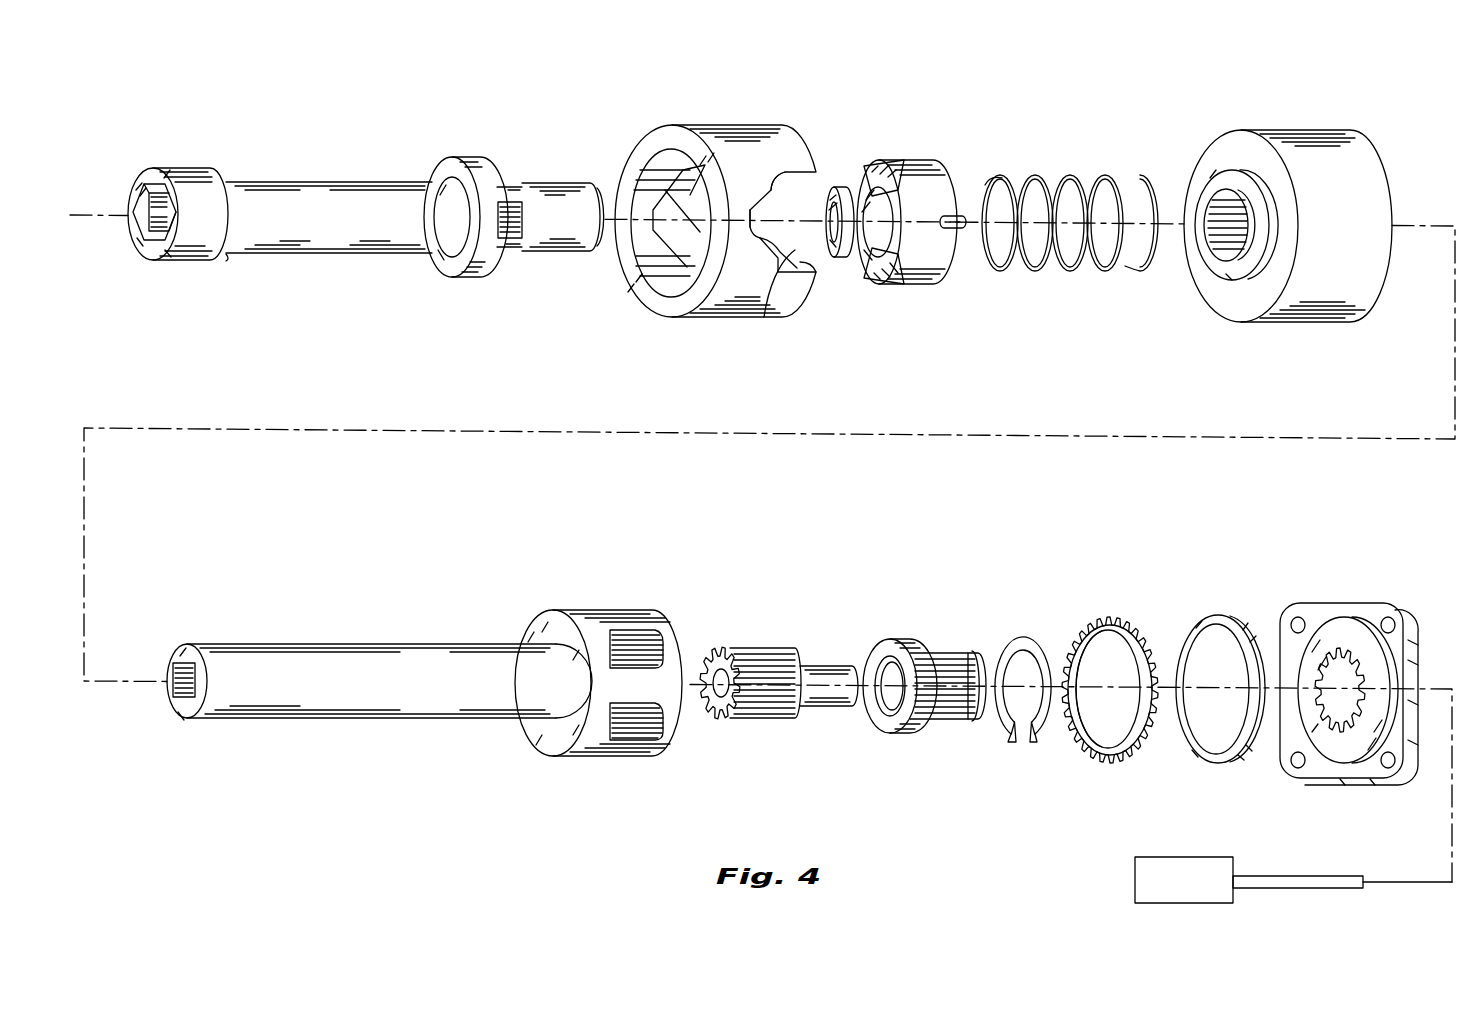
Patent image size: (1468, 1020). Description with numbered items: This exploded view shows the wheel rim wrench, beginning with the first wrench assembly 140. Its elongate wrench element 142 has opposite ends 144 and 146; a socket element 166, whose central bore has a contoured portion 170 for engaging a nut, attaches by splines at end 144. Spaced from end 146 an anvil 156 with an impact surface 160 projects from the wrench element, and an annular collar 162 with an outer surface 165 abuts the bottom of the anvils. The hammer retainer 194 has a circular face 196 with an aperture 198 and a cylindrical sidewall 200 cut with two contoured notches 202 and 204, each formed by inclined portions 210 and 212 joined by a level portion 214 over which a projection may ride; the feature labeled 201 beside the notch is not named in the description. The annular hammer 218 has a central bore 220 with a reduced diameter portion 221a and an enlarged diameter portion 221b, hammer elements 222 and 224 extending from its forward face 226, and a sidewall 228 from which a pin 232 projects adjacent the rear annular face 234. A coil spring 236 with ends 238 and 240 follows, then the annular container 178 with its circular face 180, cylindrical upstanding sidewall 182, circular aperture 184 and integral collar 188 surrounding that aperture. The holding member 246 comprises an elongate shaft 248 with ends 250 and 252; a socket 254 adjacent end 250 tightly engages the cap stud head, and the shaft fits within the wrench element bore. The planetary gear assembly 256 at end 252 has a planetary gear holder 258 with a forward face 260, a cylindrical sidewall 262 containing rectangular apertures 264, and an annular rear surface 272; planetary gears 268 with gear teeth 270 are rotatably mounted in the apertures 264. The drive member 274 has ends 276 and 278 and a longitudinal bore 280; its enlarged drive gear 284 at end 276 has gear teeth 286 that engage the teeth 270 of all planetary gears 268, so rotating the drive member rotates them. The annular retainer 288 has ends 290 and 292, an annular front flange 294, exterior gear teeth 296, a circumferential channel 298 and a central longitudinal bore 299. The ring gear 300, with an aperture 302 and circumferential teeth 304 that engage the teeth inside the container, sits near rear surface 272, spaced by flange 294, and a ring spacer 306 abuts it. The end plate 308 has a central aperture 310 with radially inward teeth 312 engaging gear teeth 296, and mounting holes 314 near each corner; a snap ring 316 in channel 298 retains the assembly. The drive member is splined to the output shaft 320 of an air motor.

The first wrench assembly 140 is at (906, 70).
The elongate wrench element 142 is at (338, 222).
The end 144 is at (227, 258).
The other end 146 is at (590, 183).
The anvil 156 is at (520, 226).
The impact surface 160 is at (516, 235).
The annular collar 162 is at (448, 212).
The outer surface 165 is at (456, 260).
The socket element 166 is at (163, 216).
The contoured portion 170 is at (146, 203).
The container 178 is at (1320, 322).
The circular face 180 is at (1304, 224).
The cylindrical upstanding sidewall 182 is at (1360, 290).
The circular aperture 184 is at (1236, 210).
The integral collar 188 is at (1225, 270).
The hammer retainer 194 is at (736, 317).
The circular face 196 is at (670, 302).
The aperture 198 is at (645, 272).
The cylindrical sidewall 200 is at (713, 221).
The slot edge 201 is at (812, 250).
The contoured notch 202 is at (683, 200).
The contoured notch 204 is at (794, 266).
The inclined portion 210 is at (790, 175).
The inclined portion 212 is at (770, 250).
The level portion 214 is at (750, 228).
The hammer 218 is at (910, 211).
The central bore 220 is at (872, 272).
The reduced diameter portion 221a is at (870, 165).
The enlarged diameter portion 221b is at (898, 160).
The hammer element 222 is at (836, 190).
The hammer element 224 is at (938, 264).
The forward face 226 is at (882, 170).
The sidewall 228 is at (915, 165).
The pin 232 is at (955, 216).
The rear annular face 234 is at (950, 250).
The coil spring 236 is at (1076, 222).
The end 238 is at (988, 188).
The end 240 is at (1142, 266).
The holding member 246 is at (568, 669).
The elongate shaft 248 is at (335, 683).
The end 250 is at (182, 714).
The other end 252 is at (536, 636).
The socket 254 is at (172, 675).
The planetary gear assembly 256 is at (604, 594).
The planetary gear holder 258 is at (620, 756).
The forward face 260 is at (548, 742).
The cylindrical sidewall 262 is at (638, 619).
The apertures 264 is at (600, 640).
The planetary gear 268 is at (677, 736).
The gear teeth 270 is at (660, 730).
The annular rear surface 272 is at (658, 742).
The drive member 274 is at (776, 680).
The end 276 is at (712, 656).
The end 278 is at (838, 702).
The longitudinal bore 280 is at (736, 660).
The drive gear 284 is at (758, 720).
The gear teeth 286 is at (775, 706).
The annular retainer 288 is at (920, 654).
The end 290 is at (914, 693).
The end 292 is at (972, 660).
The annular front flange 294 is at (890, 733).
The exterior gear teeth 296 is at (942, 719).
The circumferential channel 298 is at (975, 720).
The central longitudinal bore 299 is at (876, 680).
The ring gear 300 is at (1125, 662).
The aperture 302 is at (1100, 652).
The circumferential teeth 304 is at (1132, 628).
The ring spacer 306 is at (1216, 754).
The end plate 308 is at (1358, 690).
The central aperture 310 is at (1383, 725).
The teeth 312 is at (1335, 732).
The mounting holes 314 is at (1294, 618).
The snap ring 316 is at (1028, 742).
The output shaft 320 is at (1286, 876).